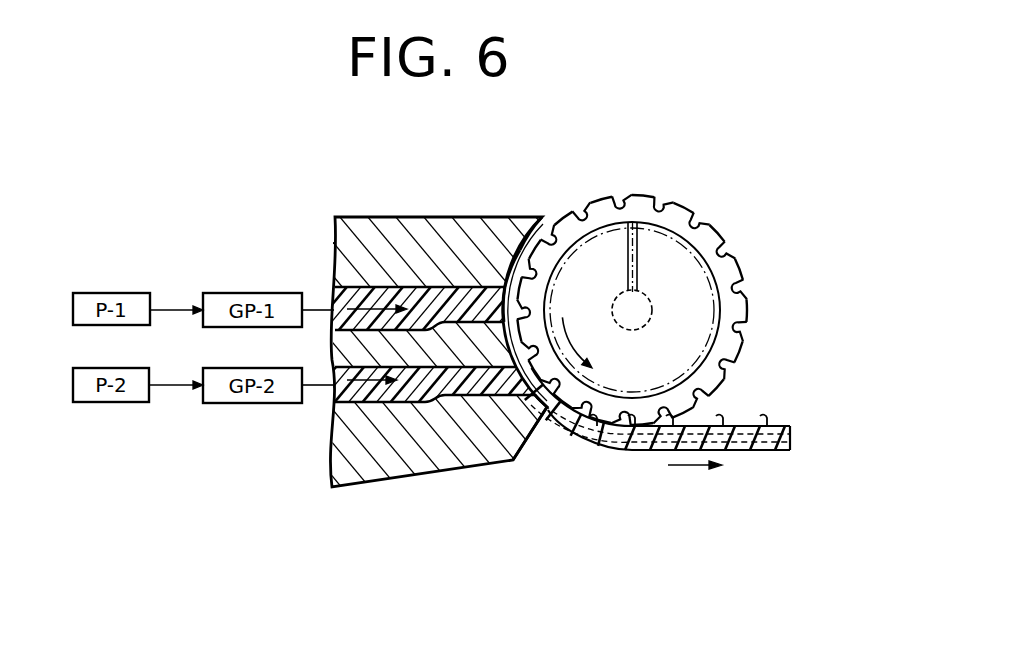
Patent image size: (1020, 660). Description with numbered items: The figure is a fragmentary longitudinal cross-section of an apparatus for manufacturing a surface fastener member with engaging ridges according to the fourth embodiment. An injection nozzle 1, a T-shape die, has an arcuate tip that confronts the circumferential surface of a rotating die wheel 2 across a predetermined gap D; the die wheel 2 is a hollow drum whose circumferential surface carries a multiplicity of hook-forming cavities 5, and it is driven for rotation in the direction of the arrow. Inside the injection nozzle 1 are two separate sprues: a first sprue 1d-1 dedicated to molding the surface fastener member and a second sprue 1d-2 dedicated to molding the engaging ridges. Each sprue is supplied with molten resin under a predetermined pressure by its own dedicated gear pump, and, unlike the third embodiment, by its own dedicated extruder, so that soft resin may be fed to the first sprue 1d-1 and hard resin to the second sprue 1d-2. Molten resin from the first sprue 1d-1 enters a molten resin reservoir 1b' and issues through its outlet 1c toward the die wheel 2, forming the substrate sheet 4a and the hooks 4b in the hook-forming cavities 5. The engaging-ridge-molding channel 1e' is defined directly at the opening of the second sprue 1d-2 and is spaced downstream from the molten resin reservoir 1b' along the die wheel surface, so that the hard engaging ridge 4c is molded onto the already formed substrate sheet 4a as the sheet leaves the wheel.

The injection nozzle 1 is at (366, 238).
The molten resin reservoir 1b' is at (505, 231).
The outlet 1c is at (480, 285).
The first sprue 1d-1 is at (386, 291).
The second sprue 1d-2 is at (368, 398).
The engaging-ridge-molding channel 1e' is at (508, 469).
The gap D is at (534, 232).
The die wheel 2 is at (708, 233).
The hook-forming cavities 5 is at (748, 312).
The substrate sheet 4a is at (745, 437).
The hooks 4b is at (724, 424).
The engaging ridge 4c is at (742, 446).